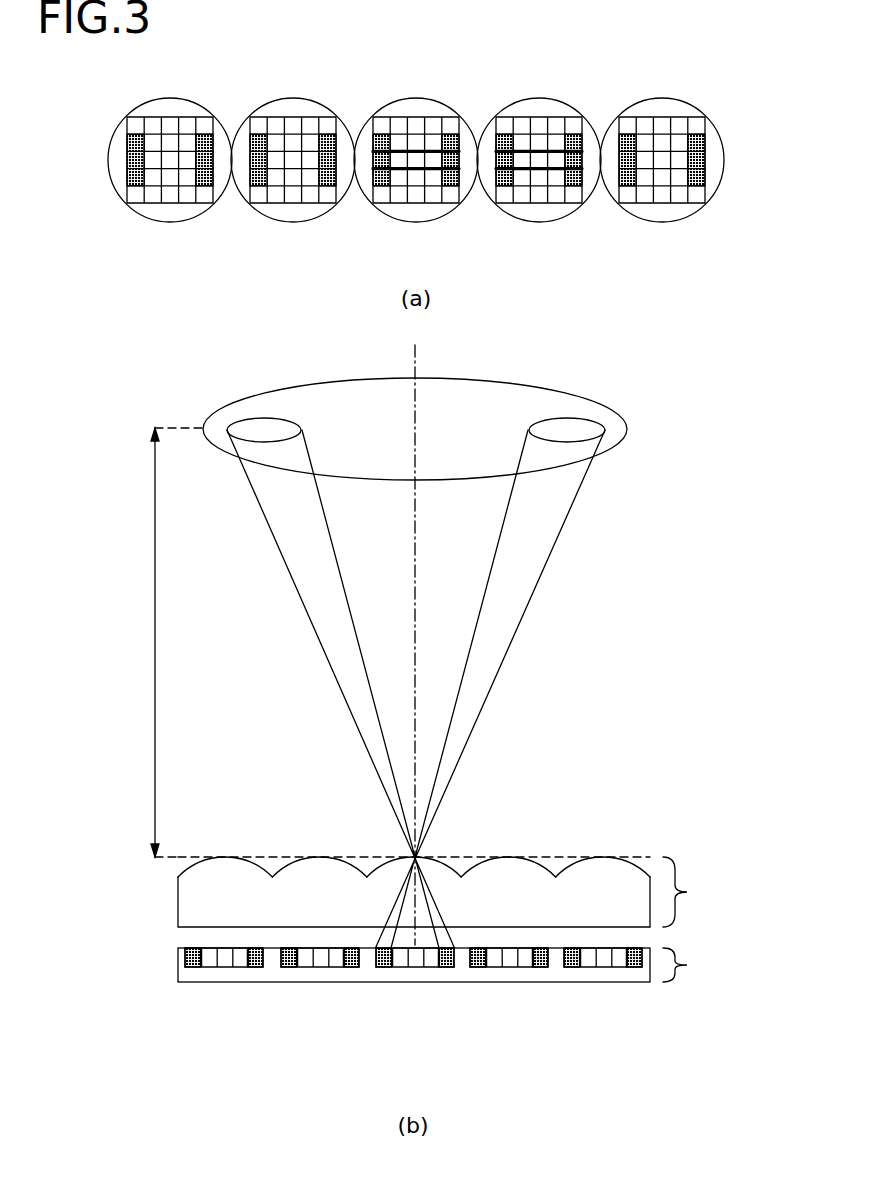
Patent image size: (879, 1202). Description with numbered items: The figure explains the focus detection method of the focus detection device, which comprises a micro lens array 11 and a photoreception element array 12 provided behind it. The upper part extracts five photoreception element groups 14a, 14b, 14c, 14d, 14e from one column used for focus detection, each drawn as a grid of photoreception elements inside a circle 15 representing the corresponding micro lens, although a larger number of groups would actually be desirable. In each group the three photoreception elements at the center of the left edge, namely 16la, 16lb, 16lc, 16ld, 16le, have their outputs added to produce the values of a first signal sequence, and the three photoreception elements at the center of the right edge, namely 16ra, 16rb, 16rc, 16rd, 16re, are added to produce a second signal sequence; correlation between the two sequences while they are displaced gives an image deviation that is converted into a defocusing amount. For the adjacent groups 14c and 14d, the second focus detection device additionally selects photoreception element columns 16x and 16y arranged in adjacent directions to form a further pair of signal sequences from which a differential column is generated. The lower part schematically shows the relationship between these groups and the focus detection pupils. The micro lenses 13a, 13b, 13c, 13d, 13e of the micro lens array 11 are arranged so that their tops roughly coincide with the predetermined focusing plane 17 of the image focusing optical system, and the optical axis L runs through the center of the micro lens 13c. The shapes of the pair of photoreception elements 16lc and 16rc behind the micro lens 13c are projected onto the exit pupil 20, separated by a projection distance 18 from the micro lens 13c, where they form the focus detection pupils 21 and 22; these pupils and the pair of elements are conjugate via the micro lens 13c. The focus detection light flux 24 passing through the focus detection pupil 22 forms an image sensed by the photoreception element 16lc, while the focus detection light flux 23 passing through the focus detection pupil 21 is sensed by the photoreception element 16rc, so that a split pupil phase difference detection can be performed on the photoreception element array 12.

The micro lens array 11 is at (447, 892).
The photoreception element array 12 is at (447, 965).
The micro lens 13a is at (230, 867).
The micro lens 13b is at (312, 867).
The micro lens 13c is at (438, 873).
The micro lens 13d is at (522, 873).
The micro lens 13e is at (602, 873).
The photoreception element group 14a is at (172, 117).
The photoreception element group 14b is at (292, 117).
The photoreception element group 14c is at (412, 117).
The photoreception element group 14d is at (538, 117).
The photoreception element group 14e is at (638, 117).
The lens (plan view) 15 is at (222, 128).
The photoreception elements 16la is at (133, 187).
The photoreception elements 16ra is at (205, 187).
The photoreception elements 16lb is at (260, 187).
The photoreception elements 16rb is at (330, 187).
The photoreception element 16lc is at (383, 187).
The photoreception element 16rc is at (450, 187).
The photoreception elements 16ld is at (507, 187).
The photoreception elements 16rd is at (573, 187).
The photoreception elements 16le is at (627, 187).
The photoreception elements 16re is at (698, 187).
The photoreception element column 16x is at (432, 152).
The photoreception element column 16y is at (553, 152).
The predetermined focusing plane 17 is at (190, 857).
The projection distance 18 is at (173, 642).
The exit pupil 20 is at (355, 478).
The focus detection pupil 21 is at (243, 432).
The focus detection pupil 22 is at (578, 435).
The focus detection light flux 23 is at (303, 550).
The focus detection light flux 24 is at (523, 565).
The optical axis L is at (415, 598).